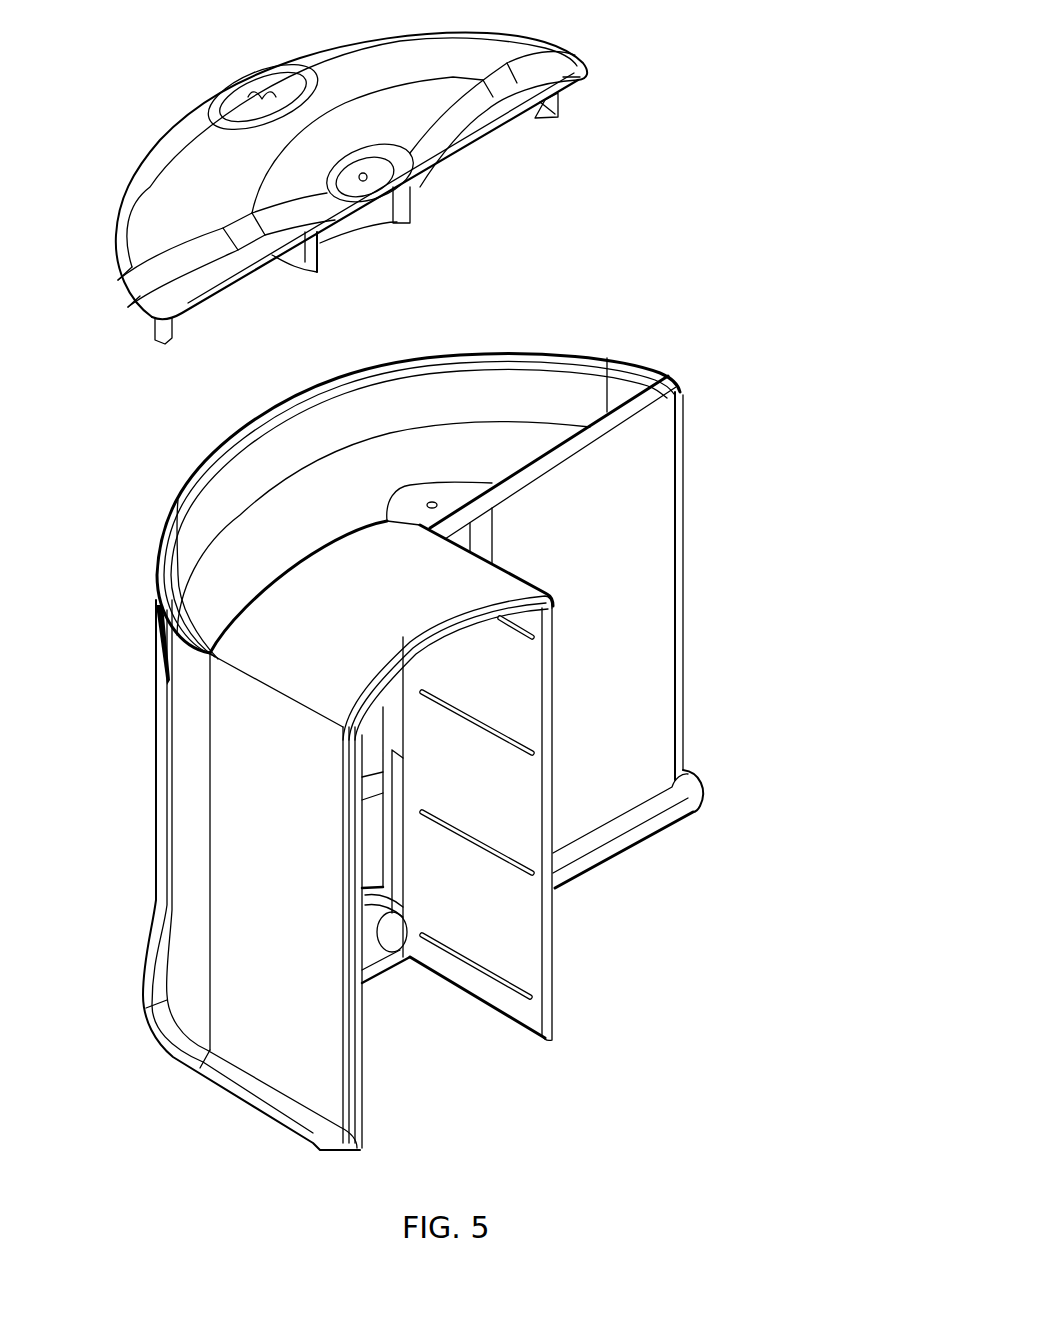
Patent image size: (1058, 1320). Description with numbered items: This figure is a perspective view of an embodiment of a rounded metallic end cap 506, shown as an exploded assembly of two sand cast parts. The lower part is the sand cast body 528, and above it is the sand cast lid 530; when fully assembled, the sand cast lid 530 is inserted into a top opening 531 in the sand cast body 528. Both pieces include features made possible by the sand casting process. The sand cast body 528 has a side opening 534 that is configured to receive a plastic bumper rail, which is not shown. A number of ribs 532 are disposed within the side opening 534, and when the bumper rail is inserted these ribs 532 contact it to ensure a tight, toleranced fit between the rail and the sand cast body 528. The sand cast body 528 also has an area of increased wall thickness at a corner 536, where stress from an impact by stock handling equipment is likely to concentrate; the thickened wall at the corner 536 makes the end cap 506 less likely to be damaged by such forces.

The rounded metallic end cap 506 is at (726, 60).
The sand cast lid 530 is at (560, 47).
The top opening 531 is at (460, 348).
The corner 536 is at (672, 373).
The sand cast body 528 is at (677, 548).
The side opening 534 is at (510, 695).
The ribs 532 is at (585, 983).